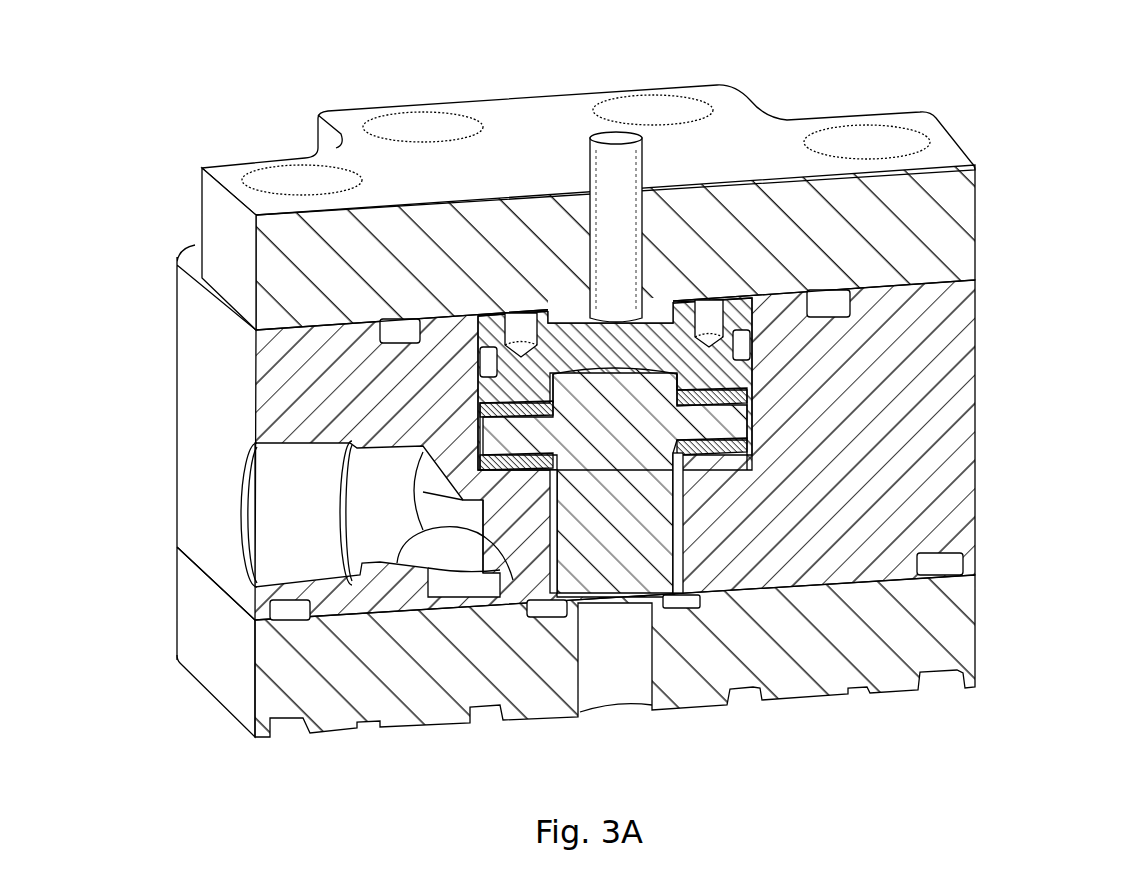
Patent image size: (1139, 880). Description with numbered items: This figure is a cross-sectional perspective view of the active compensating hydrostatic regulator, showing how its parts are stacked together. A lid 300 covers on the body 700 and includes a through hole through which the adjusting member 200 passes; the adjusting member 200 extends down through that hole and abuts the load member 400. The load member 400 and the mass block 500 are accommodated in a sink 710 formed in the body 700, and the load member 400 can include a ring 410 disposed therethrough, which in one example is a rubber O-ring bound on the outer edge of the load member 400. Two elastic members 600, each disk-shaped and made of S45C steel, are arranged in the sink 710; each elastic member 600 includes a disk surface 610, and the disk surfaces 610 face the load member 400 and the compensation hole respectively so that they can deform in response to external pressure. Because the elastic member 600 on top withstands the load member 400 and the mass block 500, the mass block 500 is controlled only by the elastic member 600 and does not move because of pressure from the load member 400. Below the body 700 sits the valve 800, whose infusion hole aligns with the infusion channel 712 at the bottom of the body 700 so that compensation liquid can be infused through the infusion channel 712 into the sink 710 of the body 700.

The lid 300 is at (357, 123).
The adjusting member 200 is at (614, 132).
The load member 400 is at (672, 313).
The ring 410 is at (762, 330).
The body 700 is at (953, 315).
The disk surface 610 is at (697, 392).
The elastic member 600 is at (710, 423).
The mass block 500 is at (747, 446).
The sink 710 is at (690, 462).
The infusion channel 712 is at (513, 580).
The valve 800 is at (943, 620).